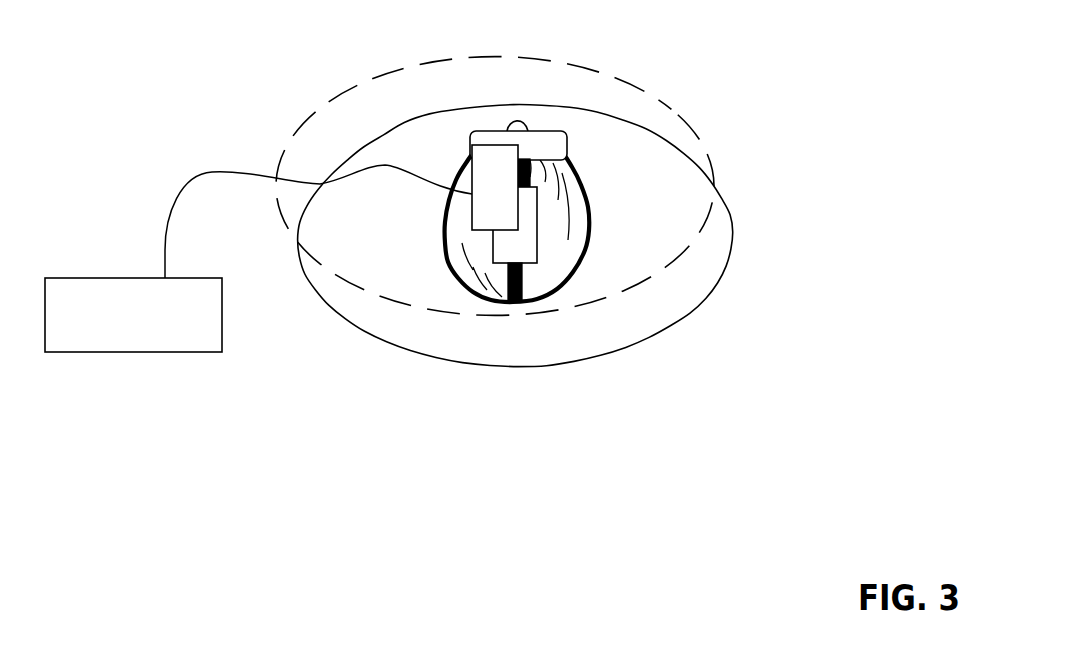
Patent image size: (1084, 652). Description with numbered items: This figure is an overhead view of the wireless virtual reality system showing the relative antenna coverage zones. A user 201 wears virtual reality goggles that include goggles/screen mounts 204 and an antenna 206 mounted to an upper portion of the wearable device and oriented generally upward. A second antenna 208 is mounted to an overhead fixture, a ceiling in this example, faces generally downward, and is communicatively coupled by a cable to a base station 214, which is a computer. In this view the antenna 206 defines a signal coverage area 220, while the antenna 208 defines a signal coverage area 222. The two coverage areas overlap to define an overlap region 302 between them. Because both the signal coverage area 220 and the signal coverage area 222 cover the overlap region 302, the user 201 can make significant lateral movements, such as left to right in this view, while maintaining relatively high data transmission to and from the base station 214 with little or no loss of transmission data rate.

The user 201 is at (563, 285).
The goggles/screen mounts 204 is at (538, 131).
The antenna 206 is at (577, 257).
The antenna 208 is at (470, 140).
The base station 214 is at (122, 353).
The signal coverage area 220 is at (733, 232).
The signal coverage area 222 is at (442, 58).
The overlap region 302 is at (657, 217).